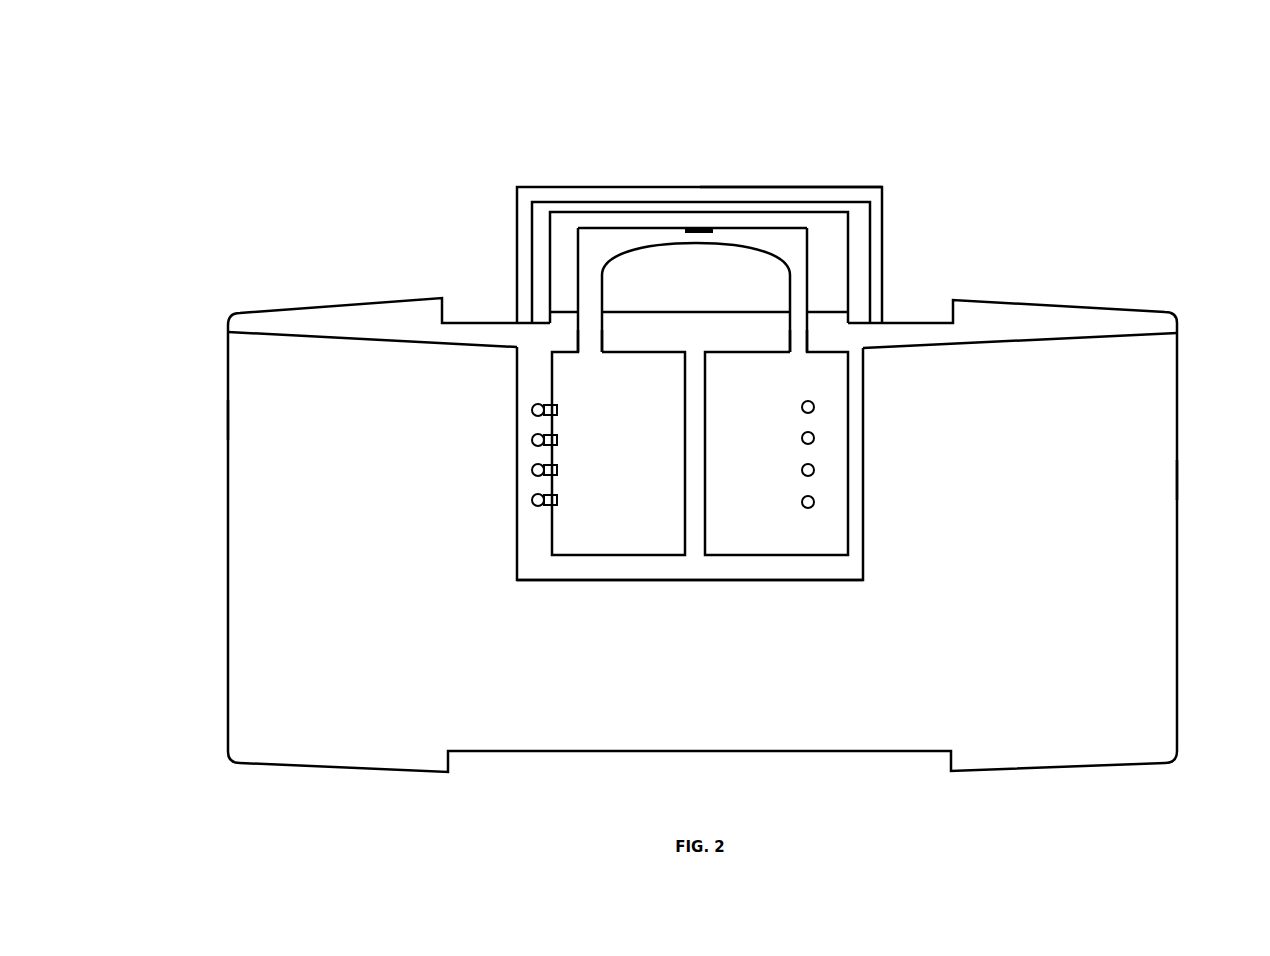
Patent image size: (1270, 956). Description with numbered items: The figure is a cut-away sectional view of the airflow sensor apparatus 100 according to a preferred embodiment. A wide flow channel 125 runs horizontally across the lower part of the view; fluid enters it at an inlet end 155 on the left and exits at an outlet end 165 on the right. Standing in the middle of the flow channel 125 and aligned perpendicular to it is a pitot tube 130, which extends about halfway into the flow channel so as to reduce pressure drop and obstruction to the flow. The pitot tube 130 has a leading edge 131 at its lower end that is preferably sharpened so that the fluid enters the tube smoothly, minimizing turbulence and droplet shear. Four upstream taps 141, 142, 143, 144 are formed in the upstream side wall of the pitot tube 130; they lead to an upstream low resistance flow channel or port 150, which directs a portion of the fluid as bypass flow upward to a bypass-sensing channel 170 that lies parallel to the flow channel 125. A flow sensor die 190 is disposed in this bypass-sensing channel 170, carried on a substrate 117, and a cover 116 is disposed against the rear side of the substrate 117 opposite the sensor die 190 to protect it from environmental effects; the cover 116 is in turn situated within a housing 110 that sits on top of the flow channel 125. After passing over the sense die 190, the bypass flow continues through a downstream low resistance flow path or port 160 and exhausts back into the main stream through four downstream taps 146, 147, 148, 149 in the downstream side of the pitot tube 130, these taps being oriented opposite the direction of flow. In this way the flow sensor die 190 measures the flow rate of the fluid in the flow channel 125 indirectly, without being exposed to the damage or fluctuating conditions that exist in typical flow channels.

The airflow sensor apparatus 100 is at (1078, 116).
The housing 110 is at (862, 243).
The cover 116 is at (800, 191).
The substrate 117 is at (640, 220).
The flow sensor die 190 is at (705, 228).
The bypass-sensing channel 170 is at (637, 243).
The upstream low resistance flow channel 150 is at (593, 350).
The downstream low resistance flow path 160 is at (800, 353).
The flow channel 125 is at (182, 520).
The inlet end 155 is at (248, 418).
The outlet end 165 is at (1160, 473).
The pitot tube 130 is at (690, 404).
The leading edge 131 is at (516, 548).
The upstream tap 141 is at (520, 410).
The upstream tap 142 is at (520, 440).
The upstream tap 143 is at (520, 470).
The upstream tap 144 is at (520, 500).
The downstream tap 146 is at (826, 407).
The downstream tap 147 is at (826, 438).
The downstream tap 148 is at (826, 470).
The downstream tap 149 is at (826, 502).